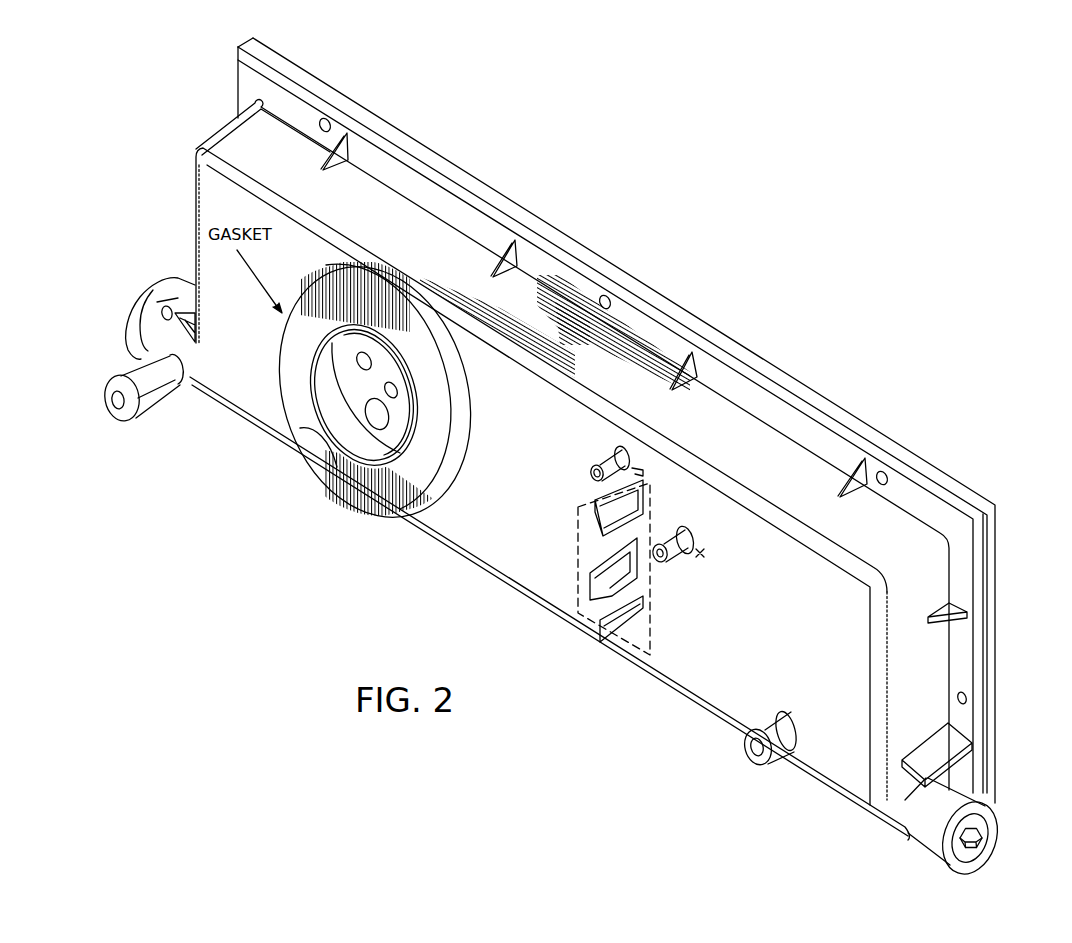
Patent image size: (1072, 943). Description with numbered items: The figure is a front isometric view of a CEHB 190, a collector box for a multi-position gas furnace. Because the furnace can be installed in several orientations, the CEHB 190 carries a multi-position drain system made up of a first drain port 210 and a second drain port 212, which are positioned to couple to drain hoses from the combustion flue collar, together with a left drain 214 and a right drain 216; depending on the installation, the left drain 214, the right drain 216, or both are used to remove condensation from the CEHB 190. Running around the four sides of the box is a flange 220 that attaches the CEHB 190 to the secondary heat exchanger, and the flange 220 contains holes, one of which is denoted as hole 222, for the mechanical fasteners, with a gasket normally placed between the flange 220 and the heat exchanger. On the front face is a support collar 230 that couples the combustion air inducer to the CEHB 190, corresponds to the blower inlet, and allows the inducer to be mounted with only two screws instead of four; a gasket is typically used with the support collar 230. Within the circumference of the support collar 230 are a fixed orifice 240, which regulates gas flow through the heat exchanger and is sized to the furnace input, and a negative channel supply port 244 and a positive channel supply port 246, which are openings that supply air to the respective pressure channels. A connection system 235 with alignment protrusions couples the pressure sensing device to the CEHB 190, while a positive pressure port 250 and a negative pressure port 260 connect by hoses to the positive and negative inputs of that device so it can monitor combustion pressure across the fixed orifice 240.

The CEHB 190 is at (445, 626).
The first drain port 210 is at (118, 428).
The second drain port 212 is at (757, 765).
The left drain 214 is at (133, 318).
The right drain 216 is at (997, 828).
The flange 220 is at (940, 478).
The hole 222 is at (325, 118).
The support collar 230 is at (318, 437).
The connection system 235 is at (570, 532).
The fixed orifice 240 is at (367, 407).
The negative channel supply port 244 is at (357, 362).
The positive channel supply port 246 is at (397, 393).
The positive pressure port 250 is at (672, 560).
The negative pressure port 260 is at (590, 473).